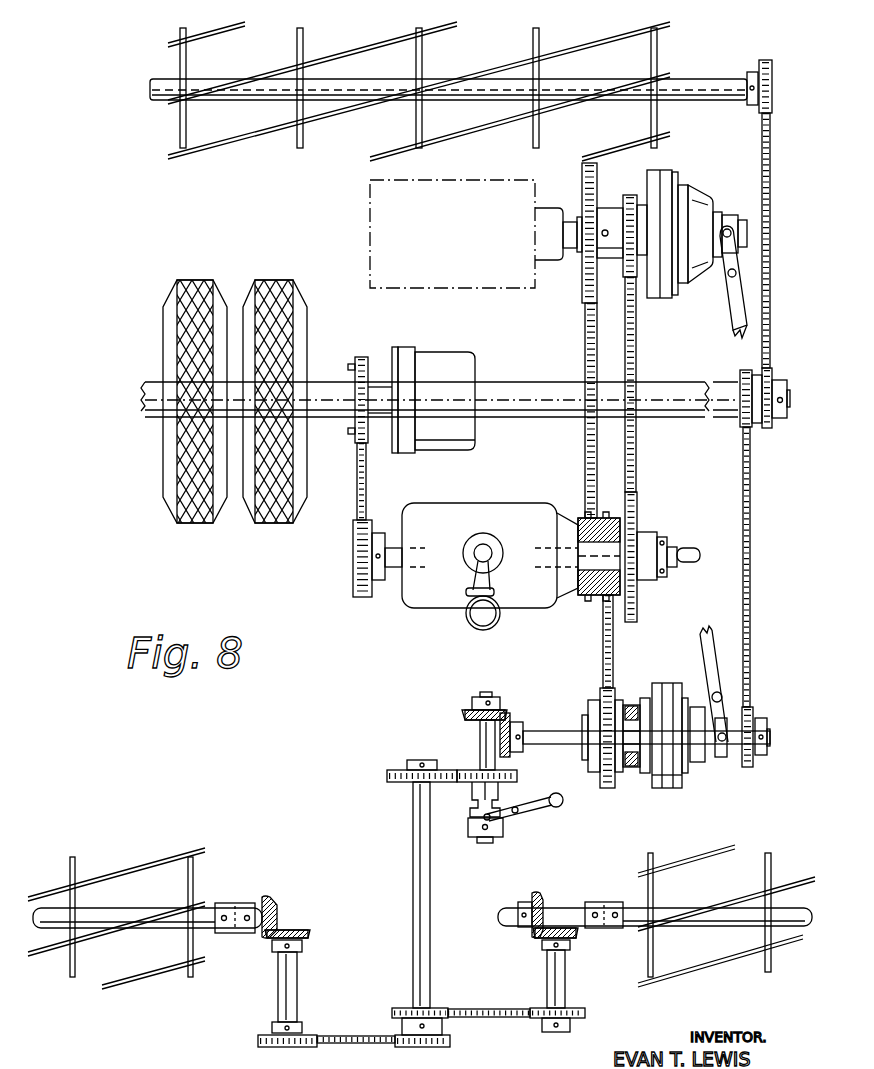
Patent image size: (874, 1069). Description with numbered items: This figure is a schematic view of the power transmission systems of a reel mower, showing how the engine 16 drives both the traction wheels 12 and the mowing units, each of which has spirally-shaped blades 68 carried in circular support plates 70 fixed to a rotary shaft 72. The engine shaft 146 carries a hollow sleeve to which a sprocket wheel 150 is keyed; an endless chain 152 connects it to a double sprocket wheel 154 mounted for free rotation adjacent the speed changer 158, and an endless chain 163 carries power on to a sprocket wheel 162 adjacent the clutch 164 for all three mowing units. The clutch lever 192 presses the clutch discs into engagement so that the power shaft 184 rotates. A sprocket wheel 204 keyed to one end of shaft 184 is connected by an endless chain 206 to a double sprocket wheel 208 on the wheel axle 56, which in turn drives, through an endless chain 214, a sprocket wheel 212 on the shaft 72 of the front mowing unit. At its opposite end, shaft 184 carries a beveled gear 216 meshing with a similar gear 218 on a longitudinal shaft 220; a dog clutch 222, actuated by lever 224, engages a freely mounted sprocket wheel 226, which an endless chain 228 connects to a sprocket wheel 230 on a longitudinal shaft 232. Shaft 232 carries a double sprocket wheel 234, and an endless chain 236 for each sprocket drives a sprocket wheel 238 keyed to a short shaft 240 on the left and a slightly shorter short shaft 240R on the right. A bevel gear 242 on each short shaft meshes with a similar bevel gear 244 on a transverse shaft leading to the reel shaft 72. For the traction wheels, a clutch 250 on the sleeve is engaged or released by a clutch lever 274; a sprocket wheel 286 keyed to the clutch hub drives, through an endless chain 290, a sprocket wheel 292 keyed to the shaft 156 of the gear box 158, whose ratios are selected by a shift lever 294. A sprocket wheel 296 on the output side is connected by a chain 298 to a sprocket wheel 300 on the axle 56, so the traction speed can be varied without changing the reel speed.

The traction wheels 12 is at (165, 488).
The engine 16 is at (473, 234).
The axle 56 is at (150, 383).
The spirally-shaped blades 68 is at (610, 38).
The circular support plates 70 is at (654, 60).
The rotary shaft 72 is at (584, 86).
The engine shaft 146 is at (577, 215).
The sprocket wheel 150 is at (592, 173).
The endless chain 152 is at (583, 334).
The double sprocket wheel 154 is at (604, 517).
The shaft 156 is at (690, 551).
The speed changer 158 is at (515, 511).
The sprocket wheel 162 is at (598, 695).
The endless chain 163 is at (613, 651).
The clutch 164 is at (671, 678).
The power shaft 184 is at (736, 748).
The clutch lever 192 is at (714, 634).
The sprocket wheel 204 is at (756, 713).
The endless chain 206 is at (751, 538).
The double sprocket wheel 208 is at (757, 372).
The sprocket wheel 212 is at (773, 72).
The endless chain 214 is at (772, 165).
The beveled gear 216 is at (516, 725).
The beveled gear 218 is at (500, 712).
The longitudinal shaft 220 is at (480, 734).
The dog clutch 222 is at (505, 826).
The lever 224 is at (537, 800).
The sprocket wheel 226 is at (487, 771).
The endless chain 228 is at (452, 784).
The sprocket wheel 230 is at (398, 784).
The longitudinal shaft 232 is at (415, 848).
The double sprocket wheel 234 is at (425, 1046).
The endless chain 236 is at (357, 1044).
The sprocket wheel 238 is at (298, 1046).
The short shaft 240 is at (297, 990).
The short shaft 240R is at (565, 978).
The bevel gear 242 is at (305, 932).
The bevel gear 244 is at (273, 901).
The clutch 250 is at (690, 183).
The clutch lever 274 is at (733, 306).
The sprocket wheel 286 is at (626, 262).
The endless chain 290 is at (637, 332).
The sprocket wheel 292 is at (640, 512).
The shift lever 294 is at (467, 618).
The sprocket wheel 296 is at (353, 571).
The chain 298 is at (372, 481).
The sprocket wheel 300 is at (352, 362).